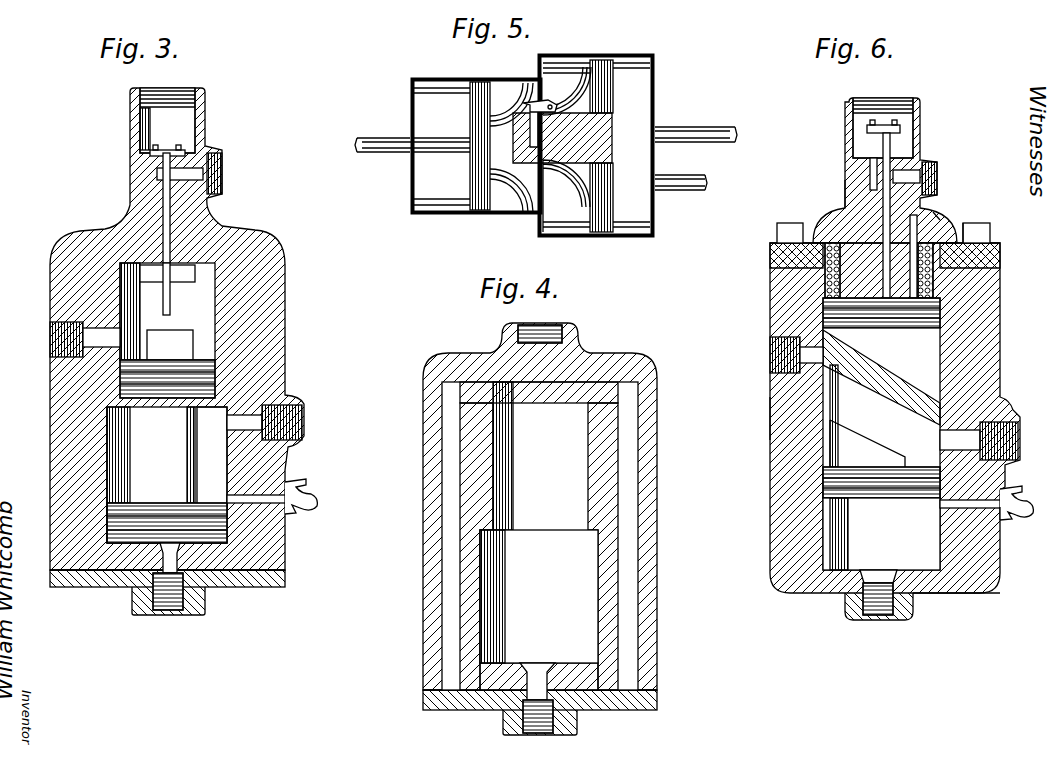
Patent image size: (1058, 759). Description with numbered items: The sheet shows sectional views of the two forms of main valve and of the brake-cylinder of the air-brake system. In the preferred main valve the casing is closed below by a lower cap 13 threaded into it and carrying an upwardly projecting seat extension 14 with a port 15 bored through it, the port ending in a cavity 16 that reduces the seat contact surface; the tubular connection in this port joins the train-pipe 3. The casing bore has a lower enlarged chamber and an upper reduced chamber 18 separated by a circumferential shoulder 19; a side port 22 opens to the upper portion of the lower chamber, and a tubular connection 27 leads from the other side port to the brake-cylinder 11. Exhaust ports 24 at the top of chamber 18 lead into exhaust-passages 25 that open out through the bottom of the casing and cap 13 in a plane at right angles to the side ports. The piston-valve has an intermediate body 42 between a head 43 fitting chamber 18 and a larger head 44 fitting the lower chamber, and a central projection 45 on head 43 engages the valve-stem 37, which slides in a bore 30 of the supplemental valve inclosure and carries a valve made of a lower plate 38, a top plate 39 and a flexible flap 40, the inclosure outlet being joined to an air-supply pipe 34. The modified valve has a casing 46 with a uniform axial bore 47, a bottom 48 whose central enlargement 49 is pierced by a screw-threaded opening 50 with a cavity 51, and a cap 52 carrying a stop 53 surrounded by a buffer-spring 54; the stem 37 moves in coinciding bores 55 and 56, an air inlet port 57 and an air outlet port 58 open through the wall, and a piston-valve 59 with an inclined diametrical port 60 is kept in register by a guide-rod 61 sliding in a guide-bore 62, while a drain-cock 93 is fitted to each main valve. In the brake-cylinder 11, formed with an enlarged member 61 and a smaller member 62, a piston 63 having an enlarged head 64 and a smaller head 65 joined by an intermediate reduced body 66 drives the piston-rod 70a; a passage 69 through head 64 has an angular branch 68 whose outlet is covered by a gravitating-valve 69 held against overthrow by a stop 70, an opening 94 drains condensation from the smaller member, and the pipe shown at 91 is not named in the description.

In FIG. 3, the train-pipe 3 is at (50, 301).
In FIG. 5, the brake-cylinder 11 is at (481, 78).
In FIG. 3, the lower cap 13 is at (222, 592).
In FIG. 4, the lower cap 13 is at (598, 710).
In FIG. 3, the seat extension 14 is at (122, 571).
In FIG. 4, the seat extension 14 is at (490, 692).
In FIG. 3, the port 15 is at (168, 575).
In FIG. 4, the port 15 is at (542, 680).
In FIG. 4, the cavity 16 is at (531, 663).
In FIG. 3, the upper reduced chamber 18 is at (285, 283).
In FIG. 4, the upper reduced chamber 18 is at (580, 457).
In FIG. 3, the circumferential shoulder 19 is at (108, 420).
In FIG. 4, the circumferential shoulder 19 is at (480, 521).
In FIG. 3, the port 22 is at (303, 401).
In FIG. 3, the exhaust ports 24 is at (211, 229).
In FIG. 4, the exhaust ports 24 is at (477, 386).
In FIG. 4, the exhaust-passages 25 is at (450, 569).
In FIG. 5, the tubular connection 27 is at (705, 128).
In FIG. 3, the bore 30 is at (136, 196).
In FIG. 6, the air-supply pipe 34 is at (903, 126).
In FIG. 6, the valve-stem 37 is at (845, 191).
In FIG. 3, the lower plate 38 is at (222, 155).
In FIG. 6, the lower plate 38 is at (921, 134).
In FIG. 3, the top plate 39 is at (187, 151).
In FIG. 6, the top plate 39 is at (850, 151).
In FIG. 3, the flexible flap 40 is at (130, 150).
In FIG. 6, the flexible flap 40 is at (863, 129).
In FIG. 3, the intermediate body 42 is at (140, 468).
In FIG. 3, the head 43 is at (287, 362).
In FIG. 3, the head 44 is at (228, 531).
In FIG. 3, the central projection 45 is at (196, 341).
In FIG. 6, the casing 46 is at (1000, 321).
In FIG. 6, the axial bore 47 is at (976, 369).
In FIG. 6, the bottom 48 is at (826, 591).
In FIG. 6, the central enlargement 49 is at (914, 606).
In FIG. 6, the screw-threaded opening 50 is at (879, 616).
In FIG. 6, the cavity 51 is at (885, 576).
In FIG. 6, the cap 52 is at (991, 243).
In FIG. 6, the stop 53 is at (770, 300).
In FIG. 6, the buffer-spring 54 is at (1000, 277).
In FIG. 6, the bore 55 is at (770, 259).
In FIG. 6, the bore 56 is at (927, 213).
In FIG. 6, the air inlet port 57 is at (1012, 483).
In FIG. 6, the air outlet port 58 is at (770, 376).
In FIG. 6, the piston-valve 59 is at (770, 473).
In FIG. 6, the inclined diametrical port 60 is at (768, 429).
In FIG. 5, the guide-rod 61 is at (627, 55).
In FIG. 6, the guide-rod 61 is at (946, 224).
In FIG. 5, the guide-bore 62 is at (440, 78).
In FIG. 6, the guide-bore 62 is at (935, 212).
In FIG. 5, the piston 63 is at (566, 196).
In FIG. 5, the enlarged head 64 is at (620, 99).
In FIG. 5, the smaller head 65 is at (468, 182).
In FIG. 5, the intermediate reduced body 66 is at (511, 187).
In FIG. 5, the angular branch 68 is at (468, 128).
In FIG. 5, the gravitating-valve 69 is at (524, 100).
In FIG. 5, the stop 70 is at (557, 91).
In FIG. 5, the piston-rod 70a is at (372, 154).
In FIG. 5, the drain pipe 91 is at (689, 191).
In FIG. 3, the drain-cock 93 is at (318, 491).
In FIG. 6, the drain-cock 93 is at (1034, 521).
In FIG. 5, the opening 94 is at (411, 204).